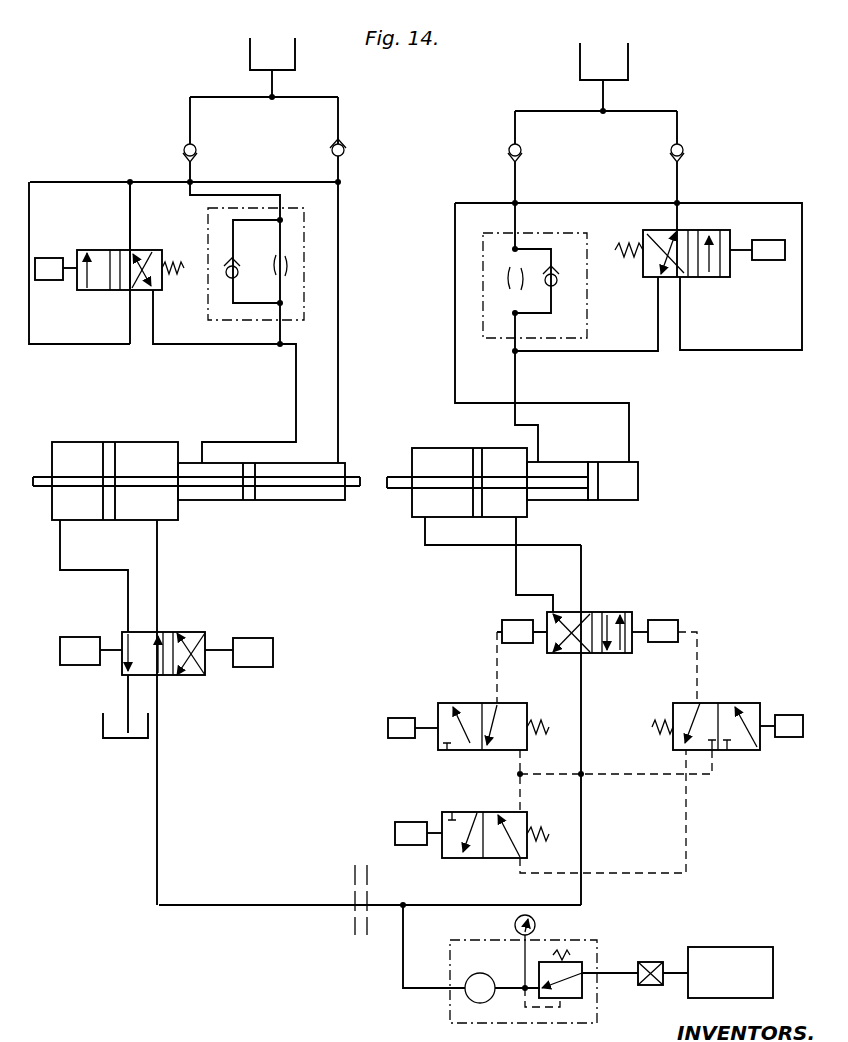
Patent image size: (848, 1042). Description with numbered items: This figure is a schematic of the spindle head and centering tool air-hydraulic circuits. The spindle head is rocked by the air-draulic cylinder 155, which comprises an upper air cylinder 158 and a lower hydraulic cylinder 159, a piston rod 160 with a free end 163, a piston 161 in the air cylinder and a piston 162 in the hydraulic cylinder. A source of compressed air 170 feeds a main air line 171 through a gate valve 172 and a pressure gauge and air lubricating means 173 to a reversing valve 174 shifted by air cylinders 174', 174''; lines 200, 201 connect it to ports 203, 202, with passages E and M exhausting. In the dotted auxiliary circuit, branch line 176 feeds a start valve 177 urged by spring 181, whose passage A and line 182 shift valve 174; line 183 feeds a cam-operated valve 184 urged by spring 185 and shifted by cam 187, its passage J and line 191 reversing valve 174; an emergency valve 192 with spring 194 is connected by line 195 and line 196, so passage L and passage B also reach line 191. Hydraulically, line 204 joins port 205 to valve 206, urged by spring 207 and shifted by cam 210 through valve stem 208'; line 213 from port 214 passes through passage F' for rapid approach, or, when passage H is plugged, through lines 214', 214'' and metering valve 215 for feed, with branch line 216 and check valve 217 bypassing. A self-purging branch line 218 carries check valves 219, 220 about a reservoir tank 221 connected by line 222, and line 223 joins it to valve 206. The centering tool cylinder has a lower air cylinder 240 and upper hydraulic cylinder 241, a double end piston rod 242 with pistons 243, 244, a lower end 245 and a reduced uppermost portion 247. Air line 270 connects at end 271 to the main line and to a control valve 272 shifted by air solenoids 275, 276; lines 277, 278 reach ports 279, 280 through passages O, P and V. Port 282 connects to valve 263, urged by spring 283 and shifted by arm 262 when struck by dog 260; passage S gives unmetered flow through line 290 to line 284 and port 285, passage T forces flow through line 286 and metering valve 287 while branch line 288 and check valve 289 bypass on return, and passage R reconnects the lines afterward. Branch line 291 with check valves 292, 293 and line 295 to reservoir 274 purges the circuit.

The air-draulic cylinder 155 is at (441, 447).
The upper air cylinder 158 is at (413, 520).
The lower hydraulic cylinder 159 is at (630, 487).
The piston rod 160 is at (435, 482).
The piston 161 is at (478, 455).
The piston 162 is at (593, 497).
The free end of piston rod 163 is at (396, 475).
The source of compressed air 170 is at (745, 957).
The main air line 171 is at (582, 817).
The gate valve 172 is at (650, 962).
The pressure gauge and air lubricating means 173 is at (450, 1012).
The two-position, four-way reversing valve 174 is at (601, 648).
The air cylinder 174' is at (488, 629).
The air cylinder 174'' is at (674, 614).
The branch line 176 is at (537, 788).
The three-way push button start valve 177 is at (500, 750).
The spring 181 is at (545, 723).
The line 182 is at (496, 672).
The line 183 is at (642, 773).
The two-position, three-way valve 184 is at (737, 752).
The spring 185 is at (653, 713).
The cam 187 is at (788, 722).
The line 191 is at (698, 652).
The emergency two-position, three-way push button valve 192 is at (490, 858).
The spring 194 is at (554, 836).
The line 195 is at (519, 797).
The line 196 is at (562, 875).
The line 200 is at (516, 573).
The line 201 is at (553, 547).
The port 202 is at (425, 517).
The port 203 is at (515, 517).
The line 204 is at (573, 202).
The port 205 is at (630, 460).
The two-position, four-way valve 206 is at (708, 272).
The spring 207 is at (625, 245).
The valve stem 208' is at (761, 232).
The cam 210 is at (777, 262).
The line 213 is at (551, 354).
The port 214 is at (560, 467).
The line 214' is at (491, 348).
The line 214'' is at (490, 226).
The metering valve 215 is at (509, 282).
The branch line 216 is at (537, 320).
The check valve 217 is at (556, 286).
The branch line 218 is at (515, 125).
The check valve 219 is at (523, 167).
The check valve 220 is at (688, 167).
The fluid reservoir tank 221 is at (629, 60).
The line 222 is at (604, 93).
The line 223 is at (678, 203).
The lower air cylinder 240 is at (88, 508).
The upper hydraulic cylinder 241 is at (285, 495).
The double end piston rod 242 is at (127, 482).
The piston 243 is at (108, 442).
The piston 244 is at (250, 462).
The lower end of piston rod 245 is at (37, 475).
The uppermost portion of piston rod 247 is at (355, 477).
The adjustable lower dog 260 is at (50, 259).
The arm 262 is at (70, 291).
The two-position, four-way valve 263 is at (105, 291).
The air line 270 is at (252, 905).
The end of air line 271 is at (403, 905).
The four-way control valve 272 is at (172, 632).
The reservoir 274 is at (249, 62).
The air solenoid 275 is at (75, 638).
The air solenoid 276 is at (262, 647).
The line 277 is at (157, 560).
The line 278 is at (60, 570).
The upper port 279 is at (160, 520).
The lower port 280 is at (60, 522).
The port 282 is at (202, 453).
The spring 283 is at (177, 262).
The line 284 is at (157, 168).
The upper port 285 is at (341, 462).
The line 286 is at (282, 197).
The metering valve 287 is at (289, 268).
The branch line 288 is at (248, 309).
The check valve 289 is at (252, 261).
The line 290 is at (131, 213).
The branch line 291 is at (197, 174).
The check valve 292 is at (197, 147).
The check valve 293 is at (328, 153).
The line 295 is at (273, 80).
The valve passage T is at (108, 260).
The valve passage S is at (153, 251).
The valve passage R is at (172, 284).
The valve passage P is at (127, 655).
The valve passage O is at (157, 655).
The valve passage V is at (197, 673).
The valve passage E is at (577, 614).
The valve passage M is at (607, 618).
The valve passage A is at (465, 737).
The valve passage B is at (692, 712).
The valve passage J is at (755, 705).
The valve passage L is at (463, 842).
The valve passage H is at (700, 253).
The valve passage F' is at (635, 276).